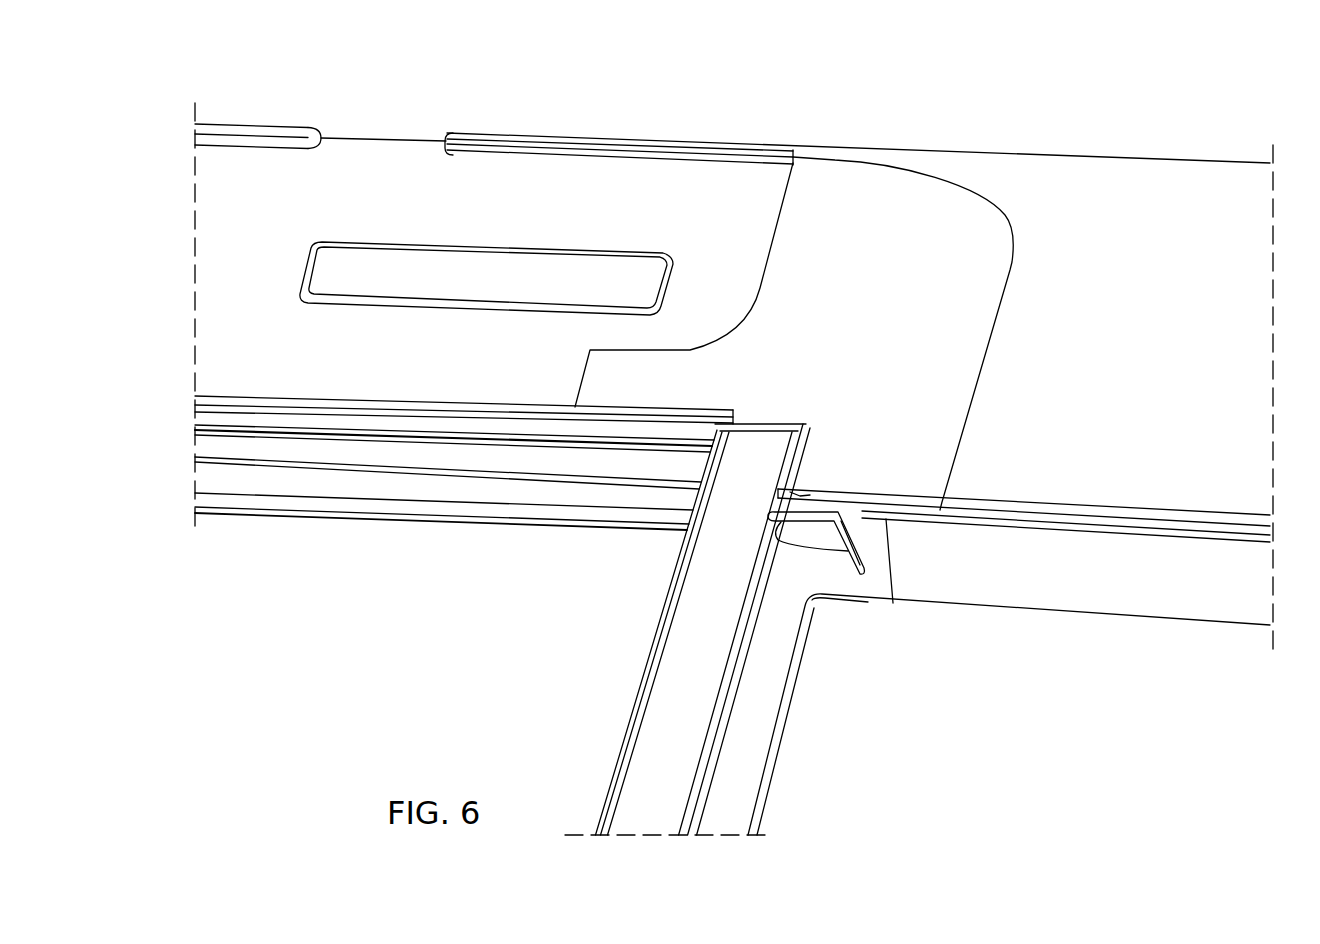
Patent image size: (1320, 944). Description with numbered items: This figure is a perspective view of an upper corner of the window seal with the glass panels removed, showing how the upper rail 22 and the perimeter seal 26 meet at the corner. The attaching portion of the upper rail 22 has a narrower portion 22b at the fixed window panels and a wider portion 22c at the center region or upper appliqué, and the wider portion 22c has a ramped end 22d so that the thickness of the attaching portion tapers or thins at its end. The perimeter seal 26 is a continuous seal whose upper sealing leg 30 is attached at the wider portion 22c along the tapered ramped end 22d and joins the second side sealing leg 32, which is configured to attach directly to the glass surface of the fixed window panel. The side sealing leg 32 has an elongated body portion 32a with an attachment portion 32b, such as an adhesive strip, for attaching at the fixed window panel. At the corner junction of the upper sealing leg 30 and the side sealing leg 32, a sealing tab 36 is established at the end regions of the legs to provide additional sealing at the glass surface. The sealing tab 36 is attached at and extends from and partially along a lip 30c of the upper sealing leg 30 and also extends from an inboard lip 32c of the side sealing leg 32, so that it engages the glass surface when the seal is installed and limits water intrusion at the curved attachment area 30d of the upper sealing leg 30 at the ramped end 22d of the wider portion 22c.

The upper rail 22 is at (977, 104).
The narrower portion 22b is at (357, 178).
The wider portion 22c is at (1173, 228).
The ramped end 22d is at (847, 492).
The perimeter seal 26 is at (732, 615).
The upper sealing leg 30 is at (1152, 655).
The lip 30c is at (1010, 584).
The curved attachment area 30d is at (862, 518).
The second side sealing leg 32 is at (720, 652).
The body portion 32a is at (692, 815).
The attachment portion 32b is at (668, 717).
The inboard lip 32c is at (773, 705).
The sealing tab 36 is at (857, 550).